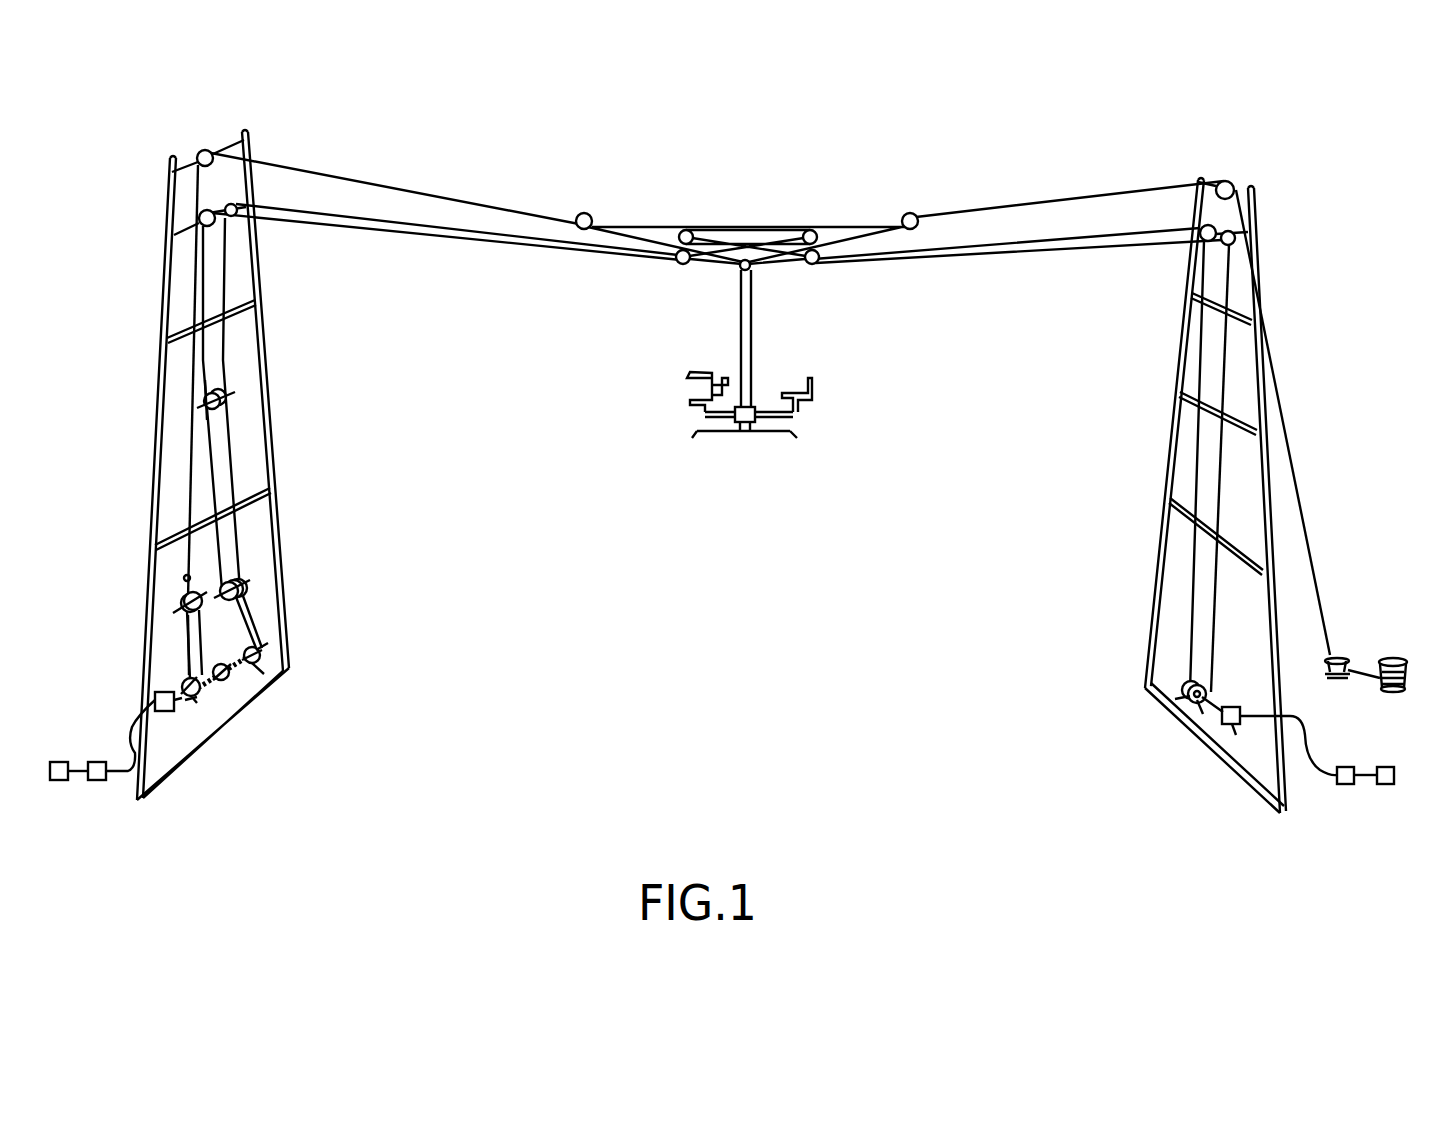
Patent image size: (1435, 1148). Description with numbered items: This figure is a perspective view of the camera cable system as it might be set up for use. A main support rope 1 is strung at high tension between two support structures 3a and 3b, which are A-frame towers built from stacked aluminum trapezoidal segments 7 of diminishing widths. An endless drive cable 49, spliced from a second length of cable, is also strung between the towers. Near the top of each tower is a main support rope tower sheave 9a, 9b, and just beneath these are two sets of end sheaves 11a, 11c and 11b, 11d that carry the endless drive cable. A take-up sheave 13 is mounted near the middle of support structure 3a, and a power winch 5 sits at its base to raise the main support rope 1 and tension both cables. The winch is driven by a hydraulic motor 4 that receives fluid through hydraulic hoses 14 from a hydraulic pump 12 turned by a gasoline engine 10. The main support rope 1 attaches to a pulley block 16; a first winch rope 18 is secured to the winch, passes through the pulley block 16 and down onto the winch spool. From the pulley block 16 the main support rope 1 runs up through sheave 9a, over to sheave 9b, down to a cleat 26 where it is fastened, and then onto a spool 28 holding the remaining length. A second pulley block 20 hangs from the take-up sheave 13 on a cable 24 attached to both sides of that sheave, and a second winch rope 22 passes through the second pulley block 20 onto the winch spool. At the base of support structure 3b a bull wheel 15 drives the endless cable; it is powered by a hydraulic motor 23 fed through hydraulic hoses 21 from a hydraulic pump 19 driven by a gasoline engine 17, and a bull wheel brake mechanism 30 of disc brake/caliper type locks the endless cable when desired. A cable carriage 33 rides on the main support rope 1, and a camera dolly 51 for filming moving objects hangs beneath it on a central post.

The main support rope 1 is at (420, 192).
The support structure 3a is at (285, 572).
The support structure 3b is at (1155, 570).
The hydraulic motor 4 is at (158, 690).
The power winch 5 is at (246, 671).
The trapezoidal segments 7 is at (122, 350).
The main support rope tower sheave 9a is at (200, 151).
The main support rope tower sheave 9b is at (1232, 183).
The gasoline engine 10 is at (58, 762).
The end sheave 11a is at (236, 204).
The end sheave 11b is at (200, 216).
The end sheave 11c is at (1234, 236).
The end sheave 11d is at (1215, 230).
The hydraulic pump 12 is at (97, 762).
The take-up sheave 13 is at (225, 408).
The hydraulic hoses 14 is at (122, 773).
The bull wheel 15 is at (1186, 686).
The pulley block 16 is at (183, 600).
The gasoline engine 17 is at (1385, 784).
The first winch rope 18 is at (182, 638).
The hydraulic pump 19 is at (1344, 784).
The second pulley block 20 is at (245, 578).
The hydraulic hoses 21 is at (1298, 718).
The second winch rope 22 is at (255, 616).
The hydraulic motor 23 is at (1235, 728).
The cable 24 is at (238, 462).
The cleat 26 is at (1337, 655).
The spool 28 is at (1393, 658).
The bull wheel brake mechanism 30 is at (1183, 717).
The cable carriage 33 is at (918, 192).
The endless drive cable 49 is at (405, 238).
The camera dolly 51 is at (634, 268).